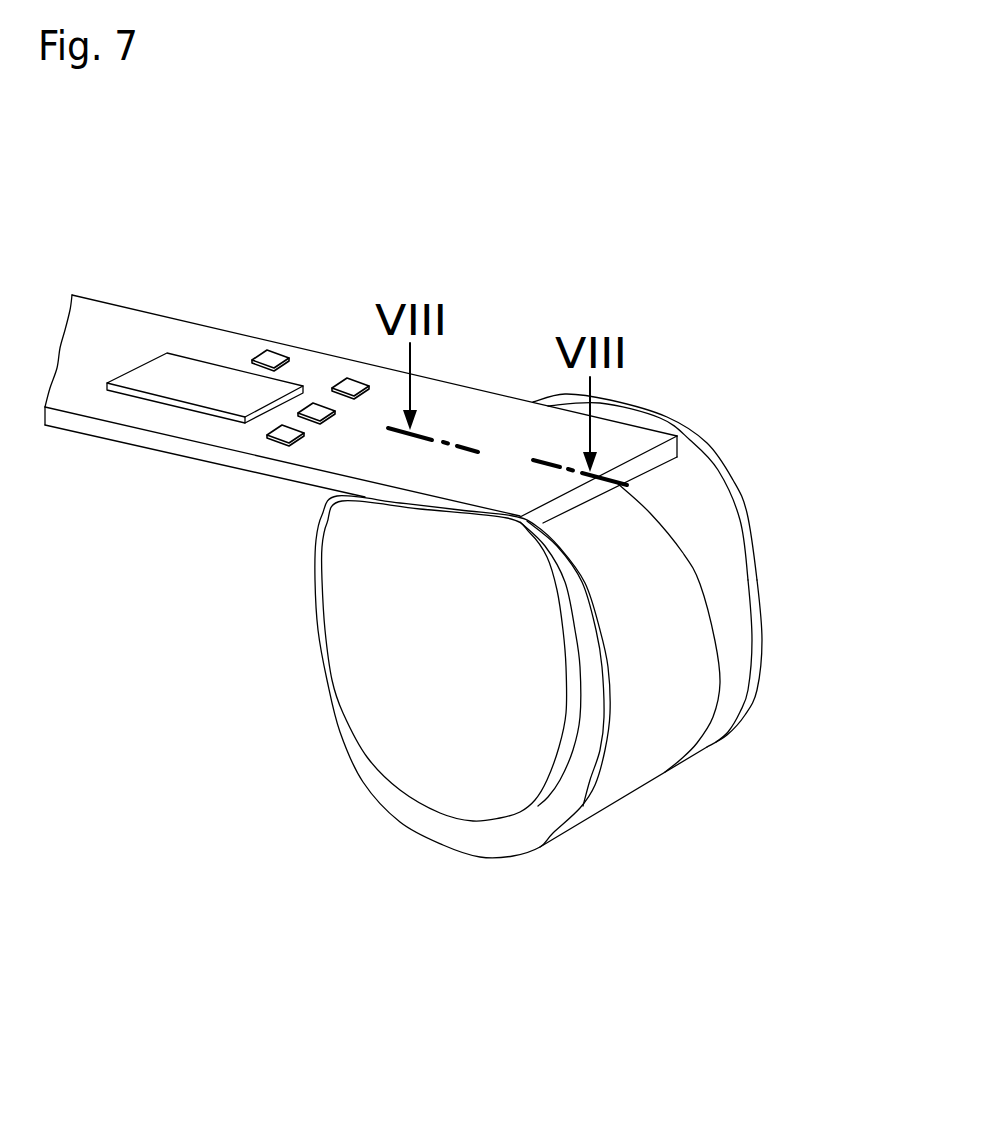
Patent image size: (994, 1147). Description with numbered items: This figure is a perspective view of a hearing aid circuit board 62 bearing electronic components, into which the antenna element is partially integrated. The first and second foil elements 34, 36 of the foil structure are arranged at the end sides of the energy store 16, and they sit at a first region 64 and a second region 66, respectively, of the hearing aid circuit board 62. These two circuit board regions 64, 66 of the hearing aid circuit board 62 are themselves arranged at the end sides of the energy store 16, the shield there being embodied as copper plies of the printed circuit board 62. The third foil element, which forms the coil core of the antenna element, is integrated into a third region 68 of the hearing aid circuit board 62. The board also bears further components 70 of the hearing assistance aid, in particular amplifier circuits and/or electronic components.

The energy store 16 is at (637, 772).
The first foil element 34 is at (343, 668).
The second foil element 36 is at (696, 432).
The hearing aid circuit board 62 is at (86, 498).
The first region 64 is at (473, 845).
The second region 66 is at (735, 647).
The third region 68 is at (178, 423).
The further components 70 is at (190, 367).